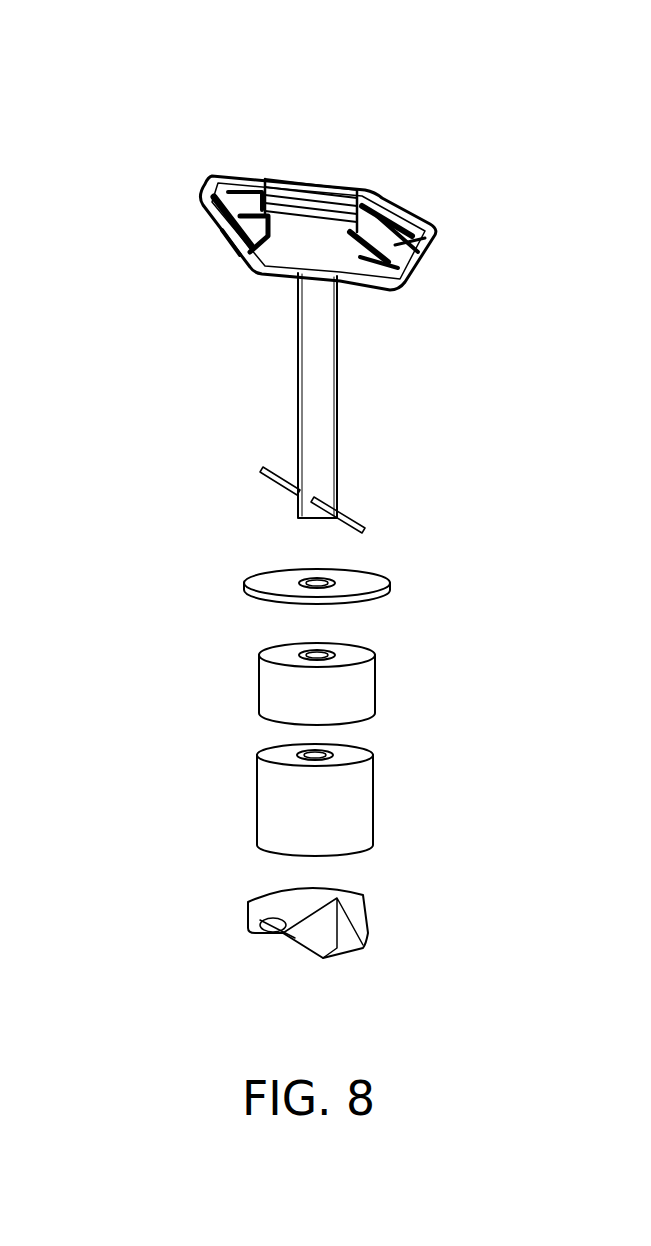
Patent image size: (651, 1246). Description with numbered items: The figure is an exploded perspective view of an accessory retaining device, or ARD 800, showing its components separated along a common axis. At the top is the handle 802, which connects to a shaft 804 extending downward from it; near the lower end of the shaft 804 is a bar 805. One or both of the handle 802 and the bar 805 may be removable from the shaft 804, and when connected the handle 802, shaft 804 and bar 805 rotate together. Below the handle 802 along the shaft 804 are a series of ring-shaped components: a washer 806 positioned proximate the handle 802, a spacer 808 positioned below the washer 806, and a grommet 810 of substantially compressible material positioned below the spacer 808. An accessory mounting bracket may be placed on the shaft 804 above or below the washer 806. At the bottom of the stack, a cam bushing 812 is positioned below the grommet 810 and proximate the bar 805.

The ARD 800 is at (144, 60).
The handle 802 is at (340, 180).
The shaft 804 is at (298, 340).
The bar 805 is at (262, 470).
The washer 806 is at (262, 570).
The spacer 808 is at (258, 655).
The grommet 810 is at (257, 755).
The cam bushing 812 is at (258, 893).